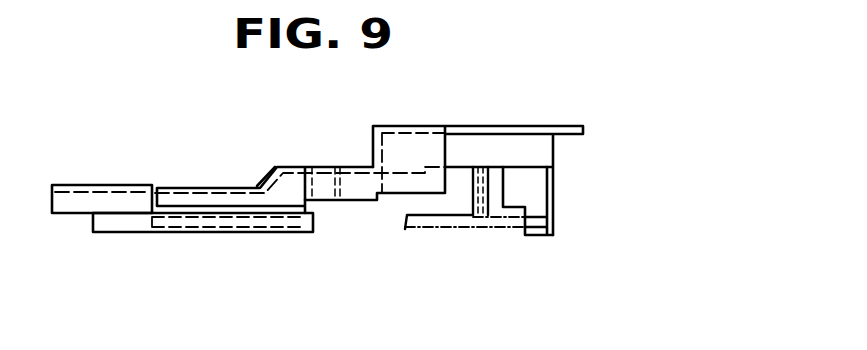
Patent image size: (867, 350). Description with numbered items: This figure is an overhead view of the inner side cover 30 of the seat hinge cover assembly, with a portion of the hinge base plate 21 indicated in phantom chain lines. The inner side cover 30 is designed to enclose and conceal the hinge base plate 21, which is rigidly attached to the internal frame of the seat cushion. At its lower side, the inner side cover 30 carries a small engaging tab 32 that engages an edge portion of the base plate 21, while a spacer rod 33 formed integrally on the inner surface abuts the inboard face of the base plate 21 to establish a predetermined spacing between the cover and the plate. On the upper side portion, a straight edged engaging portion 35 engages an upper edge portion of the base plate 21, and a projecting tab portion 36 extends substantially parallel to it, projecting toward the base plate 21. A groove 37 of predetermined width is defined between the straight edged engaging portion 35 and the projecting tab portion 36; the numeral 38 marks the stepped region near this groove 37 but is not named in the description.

The inner side cover 30 is at (512, 126).
The hinge base plate 21 is at (409, 236).
The engaging tab 32 is at (537, 235).
The spacer rod 33 is at (482, 215).
The straight edged engaging portion 35 is at (237, 223).
The projecting tab portion 36 is at (118, 223).
The groove 37 is at (188, 218).
The stepped joint 38 is at (305, 182).